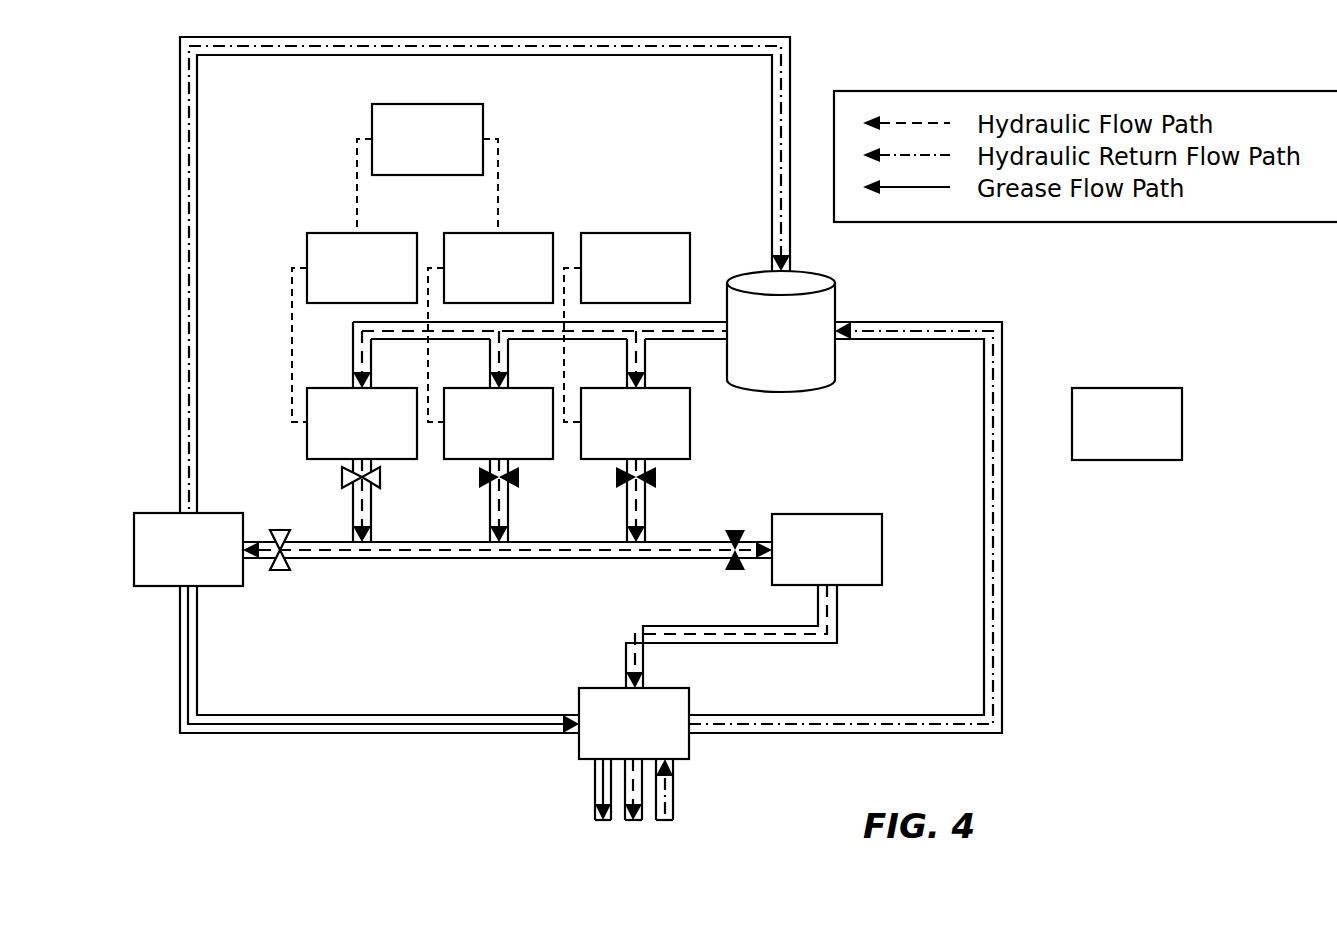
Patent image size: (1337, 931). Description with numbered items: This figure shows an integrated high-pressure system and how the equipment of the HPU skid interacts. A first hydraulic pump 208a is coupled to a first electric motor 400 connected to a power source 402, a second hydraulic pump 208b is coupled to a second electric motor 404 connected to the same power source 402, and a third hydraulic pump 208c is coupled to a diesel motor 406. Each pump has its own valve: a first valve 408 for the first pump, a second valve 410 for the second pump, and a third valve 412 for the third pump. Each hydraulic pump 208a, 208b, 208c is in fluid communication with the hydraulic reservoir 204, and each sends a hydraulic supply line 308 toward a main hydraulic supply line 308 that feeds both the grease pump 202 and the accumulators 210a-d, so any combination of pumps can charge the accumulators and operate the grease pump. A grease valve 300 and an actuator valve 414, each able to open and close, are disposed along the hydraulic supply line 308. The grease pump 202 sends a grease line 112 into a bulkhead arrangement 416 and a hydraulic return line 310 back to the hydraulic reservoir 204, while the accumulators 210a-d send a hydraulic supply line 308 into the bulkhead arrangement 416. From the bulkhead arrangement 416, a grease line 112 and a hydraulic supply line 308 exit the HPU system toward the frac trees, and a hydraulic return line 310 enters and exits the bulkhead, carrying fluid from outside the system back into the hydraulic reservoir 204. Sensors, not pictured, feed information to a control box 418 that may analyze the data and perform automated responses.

The grease line 112 is at (435, 733).
The grease pump 202 is at (164, 563).
The hydraulic reservoir 204 is at (757, 343).
The first hydraulic pump 208a is at (331, 437).
The second hydraulic pump 208b is at (468, 437).
The third hydraulic pump 208c is at (605, 437).
The accumulators 210a-d is at (785, 563).
The grease valve 300 is at (286, 572).
The hydraulic supply line 308 is at (444, 558).
The hydraulic return line 310 is at (178, 287).
The first electric motor 400 is at (338, 281).
The power source 402 is at (403, 153).
The second electric motor 404 is at (475, 281).
The diesel motor 406 is at (612, 281).
The first valve 408 is at (342, 478).
The second valve 410 is at (480, 478).
The third valve 412 is at (617, 478).
The actuator valve 414 is at (733, 570).
The bulkhead arrangement 416 is at (610, 737).
The control box 418 is at (1103, 437).